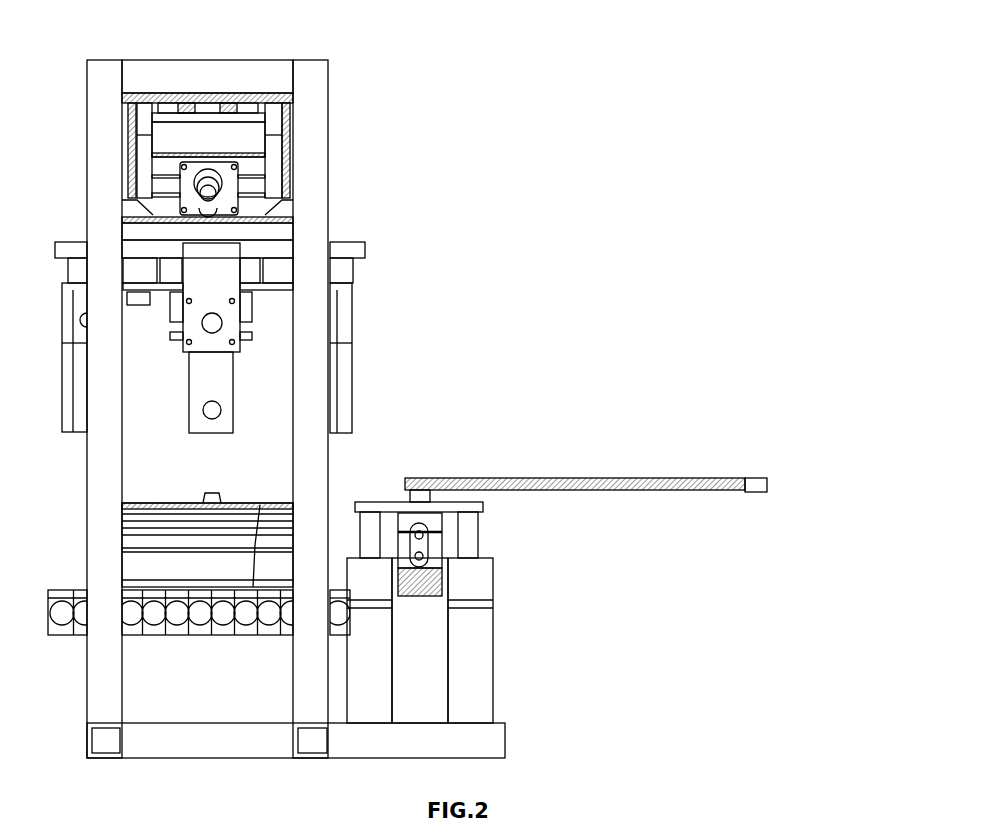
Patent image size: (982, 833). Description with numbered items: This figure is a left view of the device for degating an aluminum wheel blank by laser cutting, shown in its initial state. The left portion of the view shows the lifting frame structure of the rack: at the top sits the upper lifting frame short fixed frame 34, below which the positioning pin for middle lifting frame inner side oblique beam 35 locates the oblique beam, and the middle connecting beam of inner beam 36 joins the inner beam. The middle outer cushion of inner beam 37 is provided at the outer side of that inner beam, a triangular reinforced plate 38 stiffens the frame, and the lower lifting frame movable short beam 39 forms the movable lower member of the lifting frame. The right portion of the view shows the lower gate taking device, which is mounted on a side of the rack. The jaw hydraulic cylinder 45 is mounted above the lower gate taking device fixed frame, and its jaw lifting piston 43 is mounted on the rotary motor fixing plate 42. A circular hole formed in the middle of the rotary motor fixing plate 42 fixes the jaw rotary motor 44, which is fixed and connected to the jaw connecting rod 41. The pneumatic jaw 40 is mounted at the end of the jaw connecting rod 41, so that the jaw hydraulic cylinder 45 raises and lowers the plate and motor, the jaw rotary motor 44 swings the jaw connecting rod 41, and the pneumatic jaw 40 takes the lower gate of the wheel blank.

The upper lifting frame short fixed frame 34 is at (208, 98).
The positioning pin for middle lifting frame inner side oblique beam 35 is at (217, 120).
The middle connecting beam of inner beam 36 is at (208, 140).
The middle outer cushion of inner beam 37 is at (283, 158).
The triangular reinforced plate 38 is at (283, 207).
The lower lifting frame movable short beam 39 is at (208, 230).
The pneumatic jaw 40 is at (753, 486).
The jaw connecting rod 41 is at (587, 482).
The rotary motor fixing plate 42 is at (420, 505).
The jaw lifting piston 43 is at (470, 542).
The jaw rotary motor 44 is at (420, 578).
The jaw hydraulic cylinder 45 is at (473, 634).